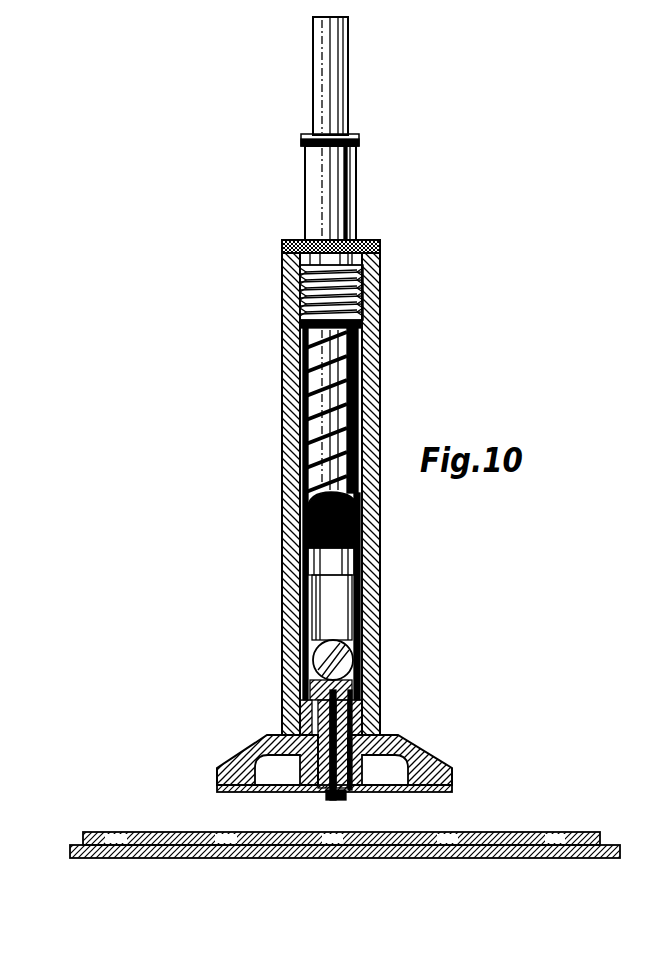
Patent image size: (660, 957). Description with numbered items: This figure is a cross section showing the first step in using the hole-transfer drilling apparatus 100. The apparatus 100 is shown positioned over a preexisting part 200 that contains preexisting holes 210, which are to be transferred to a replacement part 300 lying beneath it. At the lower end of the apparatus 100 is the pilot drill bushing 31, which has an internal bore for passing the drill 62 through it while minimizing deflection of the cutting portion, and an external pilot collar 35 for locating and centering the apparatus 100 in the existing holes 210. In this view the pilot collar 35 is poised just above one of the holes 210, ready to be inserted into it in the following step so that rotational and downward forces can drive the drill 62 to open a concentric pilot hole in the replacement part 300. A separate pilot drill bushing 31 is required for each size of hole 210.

The apparatus 100 is at (410, 363).
The drill 62 is at (343, 615).
The pilot drill bushing 31 is at (280, 767).
The pilot collar 35 is at (328, 796).
The preexisting part 200 is at (345, 827).
The preexisting holes 210 is at (222, 832).
The replacement part 300 is at (517, 858).